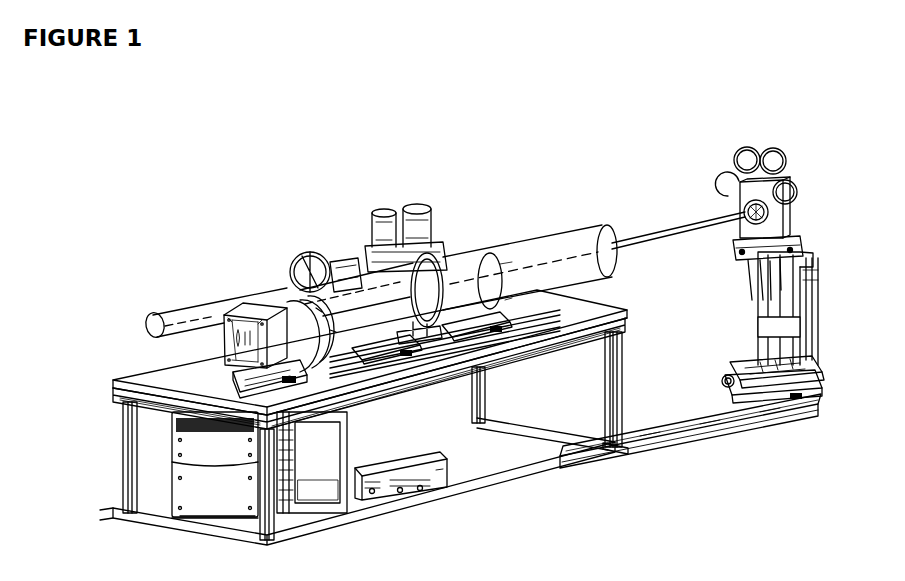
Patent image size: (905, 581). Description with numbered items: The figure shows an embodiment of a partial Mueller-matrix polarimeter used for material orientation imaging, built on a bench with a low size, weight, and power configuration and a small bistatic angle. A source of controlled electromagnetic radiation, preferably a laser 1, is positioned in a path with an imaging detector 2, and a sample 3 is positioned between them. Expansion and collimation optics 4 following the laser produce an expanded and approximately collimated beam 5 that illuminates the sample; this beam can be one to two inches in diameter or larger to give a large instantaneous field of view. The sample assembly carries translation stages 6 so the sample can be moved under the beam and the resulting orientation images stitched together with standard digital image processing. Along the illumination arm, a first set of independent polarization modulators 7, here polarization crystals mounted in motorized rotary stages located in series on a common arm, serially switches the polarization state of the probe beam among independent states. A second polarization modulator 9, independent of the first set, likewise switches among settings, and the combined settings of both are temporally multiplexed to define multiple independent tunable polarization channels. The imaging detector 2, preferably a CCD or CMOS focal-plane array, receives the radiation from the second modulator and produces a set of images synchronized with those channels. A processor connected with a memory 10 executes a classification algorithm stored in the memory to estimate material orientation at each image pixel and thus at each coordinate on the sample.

The laser 1 is at (223, 296).
The imaging detector 2 is at (280, 347).
The sample 3 is at (737, 212).
The expansion and collimation optics 4 is at (358, 265).
The expanded and approximately collimated beam 5 is at (650, 227).
The translation stages 6 is at (750, 362).
The first set of independent polarization modulators 7 is at (417, 215).
The second polarization modulator 9 is at (440, 322).
The memory 10 is at (215, 465).